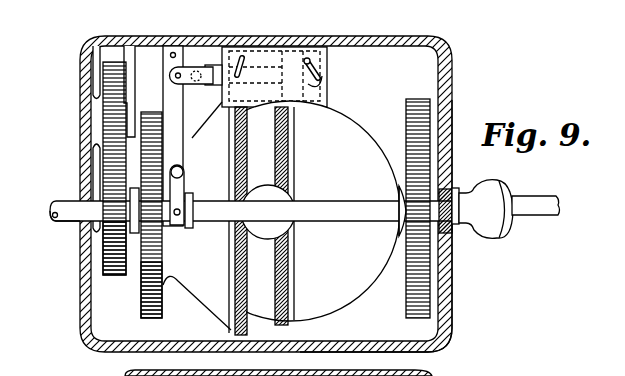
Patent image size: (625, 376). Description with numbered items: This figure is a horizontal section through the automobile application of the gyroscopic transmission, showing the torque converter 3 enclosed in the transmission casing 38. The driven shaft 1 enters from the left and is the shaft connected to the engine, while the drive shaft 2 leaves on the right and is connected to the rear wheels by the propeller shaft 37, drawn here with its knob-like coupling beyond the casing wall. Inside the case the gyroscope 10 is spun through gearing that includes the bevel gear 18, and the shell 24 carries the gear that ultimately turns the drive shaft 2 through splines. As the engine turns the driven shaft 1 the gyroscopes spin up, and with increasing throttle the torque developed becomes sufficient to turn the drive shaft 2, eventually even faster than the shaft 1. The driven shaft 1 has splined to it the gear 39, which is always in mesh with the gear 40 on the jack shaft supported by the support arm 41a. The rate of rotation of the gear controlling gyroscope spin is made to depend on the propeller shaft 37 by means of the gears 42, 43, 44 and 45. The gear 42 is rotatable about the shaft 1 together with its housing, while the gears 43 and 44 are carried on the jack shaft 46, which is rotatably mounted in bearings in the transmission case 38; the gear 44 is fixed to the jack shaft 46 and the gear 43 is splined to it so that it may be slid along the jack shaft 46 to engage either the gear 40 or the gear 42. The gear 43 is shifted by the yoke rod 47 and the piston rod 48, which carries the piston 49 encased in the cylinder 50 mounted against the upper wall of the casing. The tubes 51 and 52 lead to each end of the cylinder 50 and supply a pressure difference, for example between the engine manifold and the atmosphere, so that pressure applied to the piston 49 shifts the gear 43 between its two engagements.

The driven shaft 1 is at (68, 219).
The drive shaft 2 is at (452, 216).
The torque converter 3 is at (355, 130).
The gyroscope 10 is at (266, 176).
The bevel gear 18 is at (276, 196).
The shell 24 is at (286, 280).
The propeller shaft 37 is at (530, 196).
The casing 38 is at (452, 290).
The gear 39 is at (117, 276).
The gear 40 is at (103, 80).
The support arm 41a is at (137, 60).
The gear 42 is at (162, 314).
The gear 43 is at (162, 258).
The gear 44 is at (431, 173).
The gear 45 is at (430, 106).
The jack shaft 46 is at (351, 206).
The yoke rod 47 is at (179, 190).
The piston rod 48 is at (200, 42).
The piston 49 is at (283, 57).
The cylinder 50 is at (314, 63).
The tube 51 is at (253, 61).
The tube 52 is at (326, 84).